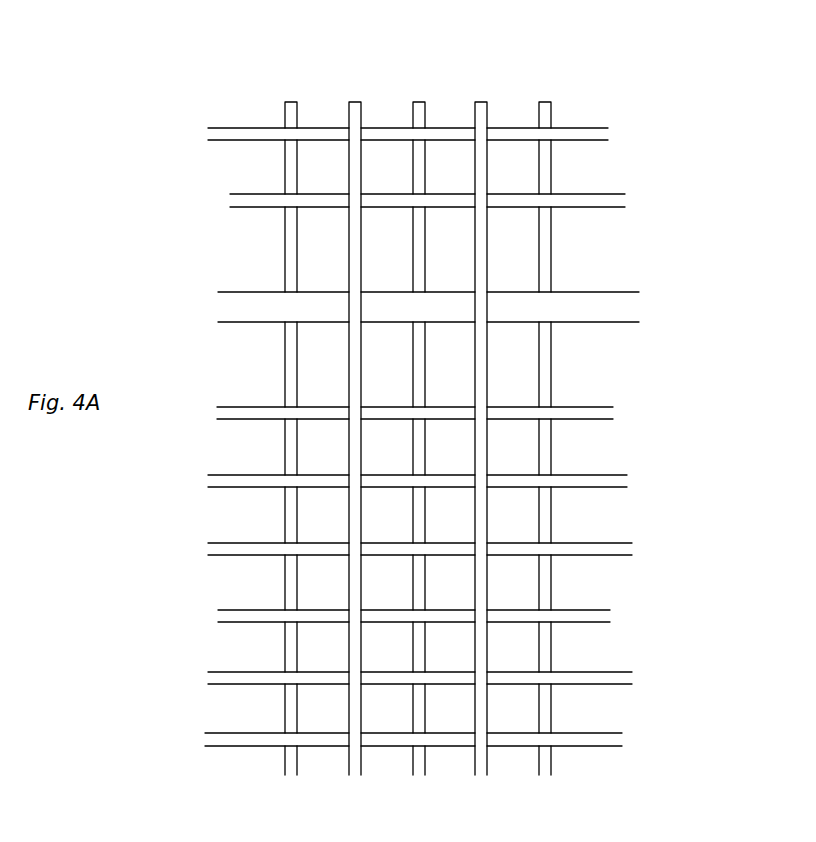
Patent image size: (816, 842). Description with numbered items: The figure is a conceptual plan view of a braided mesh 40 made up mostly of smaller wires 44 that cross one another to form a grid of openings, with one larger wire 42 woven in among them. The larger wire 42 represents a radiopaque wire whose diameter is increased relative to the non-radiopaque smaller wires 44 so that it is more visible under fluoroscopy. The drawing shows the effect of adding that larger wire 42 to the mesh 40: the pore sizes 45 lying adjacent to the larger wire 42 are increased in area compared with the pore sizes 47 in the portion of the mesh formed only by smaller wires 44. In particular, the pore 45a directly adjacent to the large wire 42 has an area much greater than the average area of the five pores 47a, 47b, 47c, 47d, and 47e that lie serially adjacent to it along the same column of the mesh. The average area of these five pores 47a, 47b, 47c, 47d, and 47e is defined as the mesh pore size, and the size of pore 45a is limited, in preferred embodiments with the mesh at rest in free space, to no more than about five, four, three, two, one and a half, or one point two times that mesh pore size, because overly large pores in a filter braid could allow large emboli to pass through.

The mesh 40 is at (678, 68).
The larger wire 42 is at (584, 308).
The smaller wires 44 is at (283, 110).
The pore sizes adjacent to larger wire 45 is at (460, 232).
The pore sizes in smaller-wire portion 47 is at (323, 170).
The pore adjacent to large wire 45a is at (341, 384).
The pore 47a is at (341, 453).
The pore 47b is at (341, 528).
The pore 47c is at (341, 593).
The pore 47d is at (341, 658).
The pore 47e is at (341, 726).